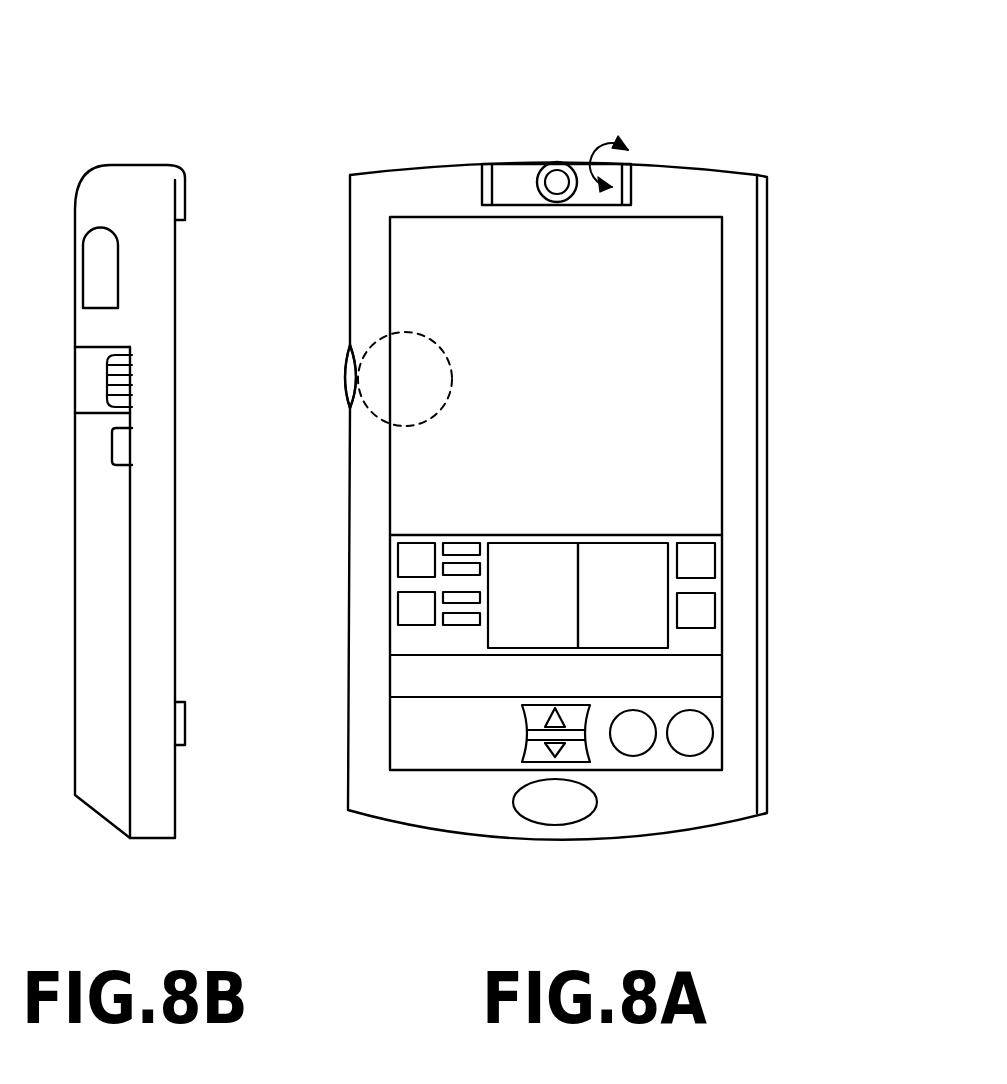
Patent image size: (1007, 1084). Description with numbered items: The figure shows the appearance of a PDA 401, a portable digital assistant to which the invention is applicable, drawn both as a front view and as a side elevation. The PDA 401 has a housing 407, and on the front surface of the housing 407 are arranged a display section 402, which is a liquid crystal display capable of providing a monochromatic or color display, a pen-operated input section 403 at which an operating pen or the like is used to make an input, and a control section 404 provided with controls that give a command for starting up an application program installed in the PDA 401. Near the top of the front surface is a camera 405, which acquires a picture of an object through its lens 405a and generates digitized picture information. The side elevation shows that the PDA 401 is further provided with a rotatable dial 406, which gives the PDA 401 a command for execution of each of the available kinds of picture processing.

In FIG. 8A, the PDA 401 is at (330, 50).
In FIG. 8A, the display section 402 is at (670, 292).
In FIG. 8A, the pen-operated input section 403 is at (785, 537).
In FIG. 8A, the control section 404 is at (785, 672).
In FIG. 8A, the camera 405 is at (497, 172).
In FIG. 8A, the lens 405a is at (557, 180).
In FIG. 8B, the rotatable dial 406 is at (132, 370).
In FIG. 8A, the rotatable dial 406 is at (352, 372).
In FIG. 8A, the housing 407 is at (692, 193).